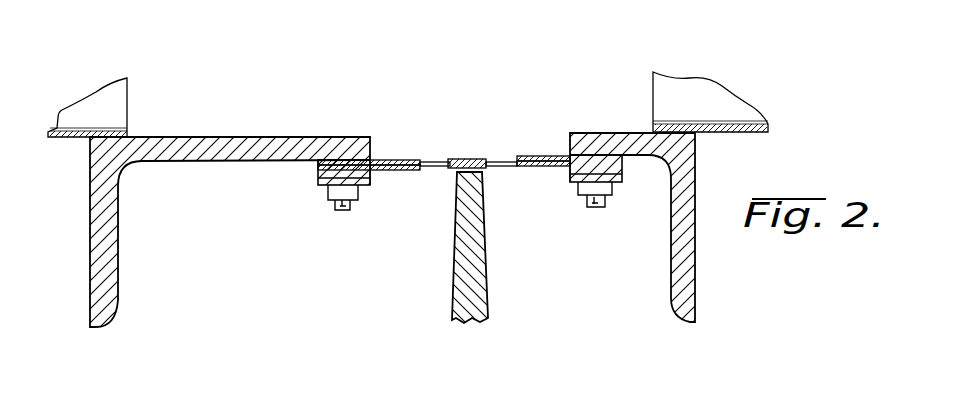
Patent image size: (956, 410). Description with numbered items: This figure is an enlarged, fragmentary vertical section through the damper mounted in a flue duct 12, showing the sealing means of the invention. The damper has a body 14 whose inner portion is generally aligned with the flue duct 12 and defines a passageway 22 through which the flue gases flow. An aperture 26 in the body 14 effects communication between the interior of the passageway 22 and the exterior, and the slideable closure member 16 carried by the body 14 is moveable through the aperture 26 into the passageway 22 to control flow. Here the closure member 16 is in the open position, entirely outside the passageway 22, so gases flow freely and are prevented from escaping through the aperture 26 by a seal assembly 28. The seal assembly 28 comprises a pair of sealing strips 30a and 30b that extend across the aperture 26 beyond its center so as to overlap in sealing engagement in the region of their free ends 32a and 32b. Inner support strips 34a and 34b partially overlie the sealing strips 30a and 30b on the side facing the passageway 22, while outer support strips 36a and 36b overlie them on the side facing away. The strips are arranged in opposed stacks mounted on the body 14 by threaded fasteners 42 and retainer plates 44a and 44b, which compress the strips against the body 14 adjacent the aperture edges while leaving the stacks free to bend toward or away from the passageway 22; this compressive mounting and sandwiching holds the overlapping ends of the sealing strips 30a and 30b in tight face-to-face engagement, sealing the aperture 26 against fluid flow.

The flue duct 12 is at (100, 95).
The body 14 is at (180, 161).
The slideable closure member 16 is at (456, 318).
The passageway 22 is at (392, 203).
The aperture 26 is at (364, 156).
The seal assembly 28 is at (480, 157).
The sealing strip 30a is at (440, 170).
The sealing strip 30b is at (512, 158).
The free end 32a is at (486, 172).
The free end 32b is at (440, 161).
The inner support strip 34a is at (380, 160).
The inner support strip 34b is at (548, 156).
The outer support strip 36a is at (372, 190).
The outer support strip 36b is at (560, 178).
The threaded fastener 42 is at (330, 192).
The retainer plate 44a is at (318, 180).
The retainer plate 44b is at (612, 185).